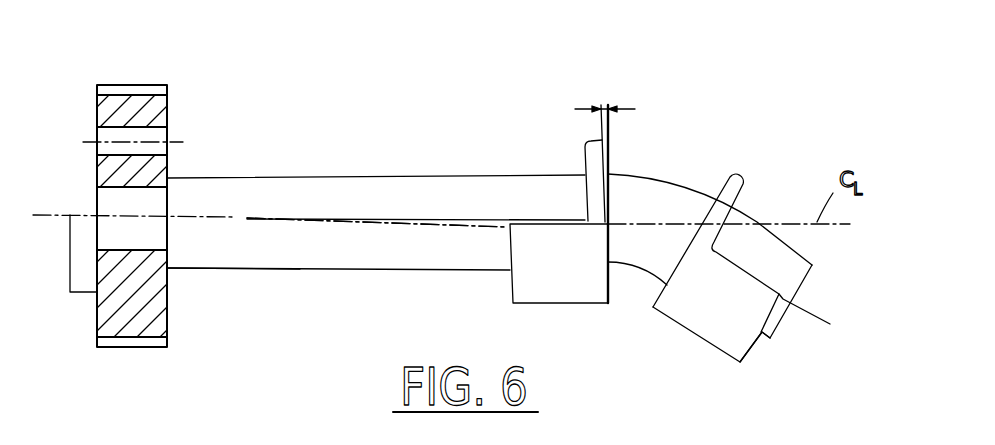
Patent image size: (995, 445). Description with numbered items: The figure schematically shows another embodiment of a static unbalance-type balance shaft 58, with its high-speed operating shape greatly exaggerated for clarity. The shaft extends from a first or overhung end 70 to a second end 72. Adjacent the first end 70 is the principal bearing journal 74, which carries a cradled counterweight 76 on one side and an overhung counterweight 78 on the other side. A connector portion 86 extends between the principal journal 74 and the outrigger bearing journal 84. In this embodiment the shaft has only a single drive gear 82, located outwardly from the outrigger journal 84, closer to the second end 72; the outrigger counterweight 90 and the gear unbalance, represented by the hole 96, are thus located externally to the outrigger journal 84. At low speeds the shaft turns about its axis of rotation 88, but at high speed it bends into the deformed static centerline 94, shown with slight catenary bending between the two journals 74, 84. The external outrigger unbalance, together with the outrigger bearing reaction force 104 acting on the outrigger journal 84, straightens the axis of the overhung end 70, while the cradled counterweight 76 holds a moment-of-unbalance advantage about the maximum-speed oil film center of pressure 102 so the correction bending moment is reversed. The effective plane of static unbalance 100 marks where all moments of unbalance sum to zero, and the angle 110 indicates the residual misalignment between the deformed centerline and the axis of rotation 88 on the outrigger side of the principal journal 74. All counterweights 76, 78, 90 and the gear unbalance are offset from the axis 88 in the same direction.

The balance shaft 58 is at (391, 120).
The first end 70 is at (824, 262).
The second end 72 is at (92, 194).
The principal bearing journal 74 is at (659, 182).
The cradled counterweight 76 is at (563, 288).
The overhung counterweight 78 is at (741, 355).
The drive gear 82 is at (130, 327).
The outrigger bearing journal 84 is at (203, 185).
The connector portion 86 is at (313, 258).
The axis of rotation 88 is at (432, 222).
The outrigger counterweight 90 is at (83, 287).
The deformed static centerline 94 is at (363, 224).
The gear unbalance hole 96 is at (158, 135).
The Effective Plane of Static Unbalance 100 is at (635, 272).
The oil film center of pressure 102 is at (653, 280).
The outrigger bearing reaction force 104 is at (232, 272).
The angle 110 is at (632, 156).